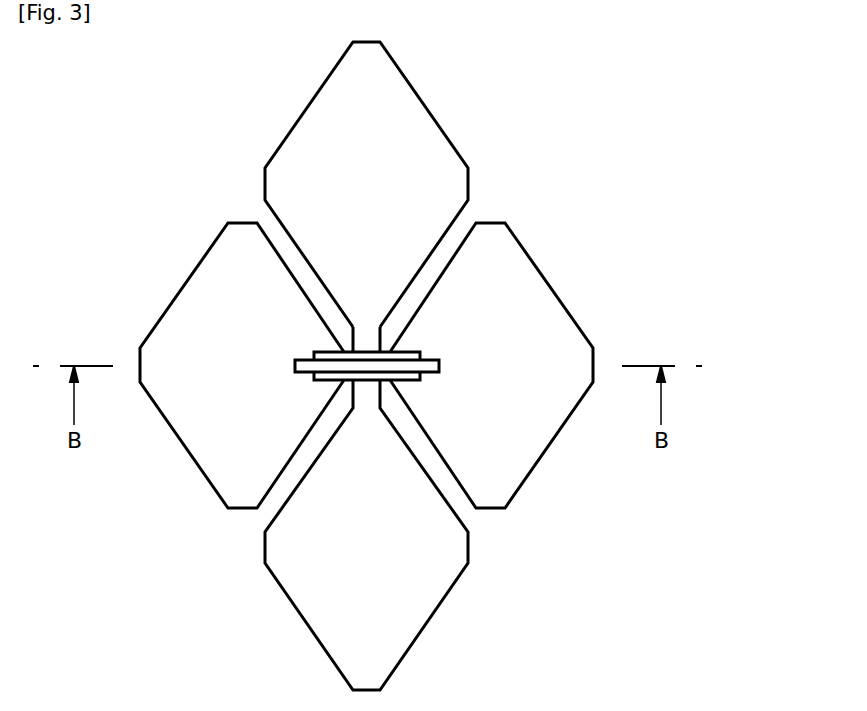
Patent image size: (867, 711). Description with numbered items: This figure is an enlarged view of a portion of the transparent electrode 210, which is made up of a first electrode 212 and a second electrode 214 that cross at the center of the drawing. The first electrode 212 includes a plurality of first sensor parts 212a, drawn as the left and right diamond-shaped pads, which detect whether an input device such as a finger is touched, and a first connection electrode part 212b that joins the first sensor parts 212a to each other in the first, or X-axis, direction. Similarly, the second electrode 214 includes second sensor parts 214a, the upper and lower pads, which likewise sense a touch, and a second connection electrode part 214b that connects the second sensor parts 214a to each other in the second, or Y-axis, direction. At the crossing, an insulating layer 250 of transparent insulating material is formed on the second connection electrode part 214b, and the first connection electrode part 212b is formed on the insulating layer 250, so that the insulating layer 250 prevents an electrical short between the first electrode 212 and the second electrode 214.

The transparent electrode 210 is at (451, 366).
The first electrode 212 is at (451, 330).
The first sensor part 212a is at (513, 266).
The first connection electrode part 212b is at (436, 364).
The second electrode 214 is at (477, 197).
The second sensor part 214a is at (430, 123).
The second connection electrode part 214b is at (370, 337).
The insulating layer 250 is at (323, 355).